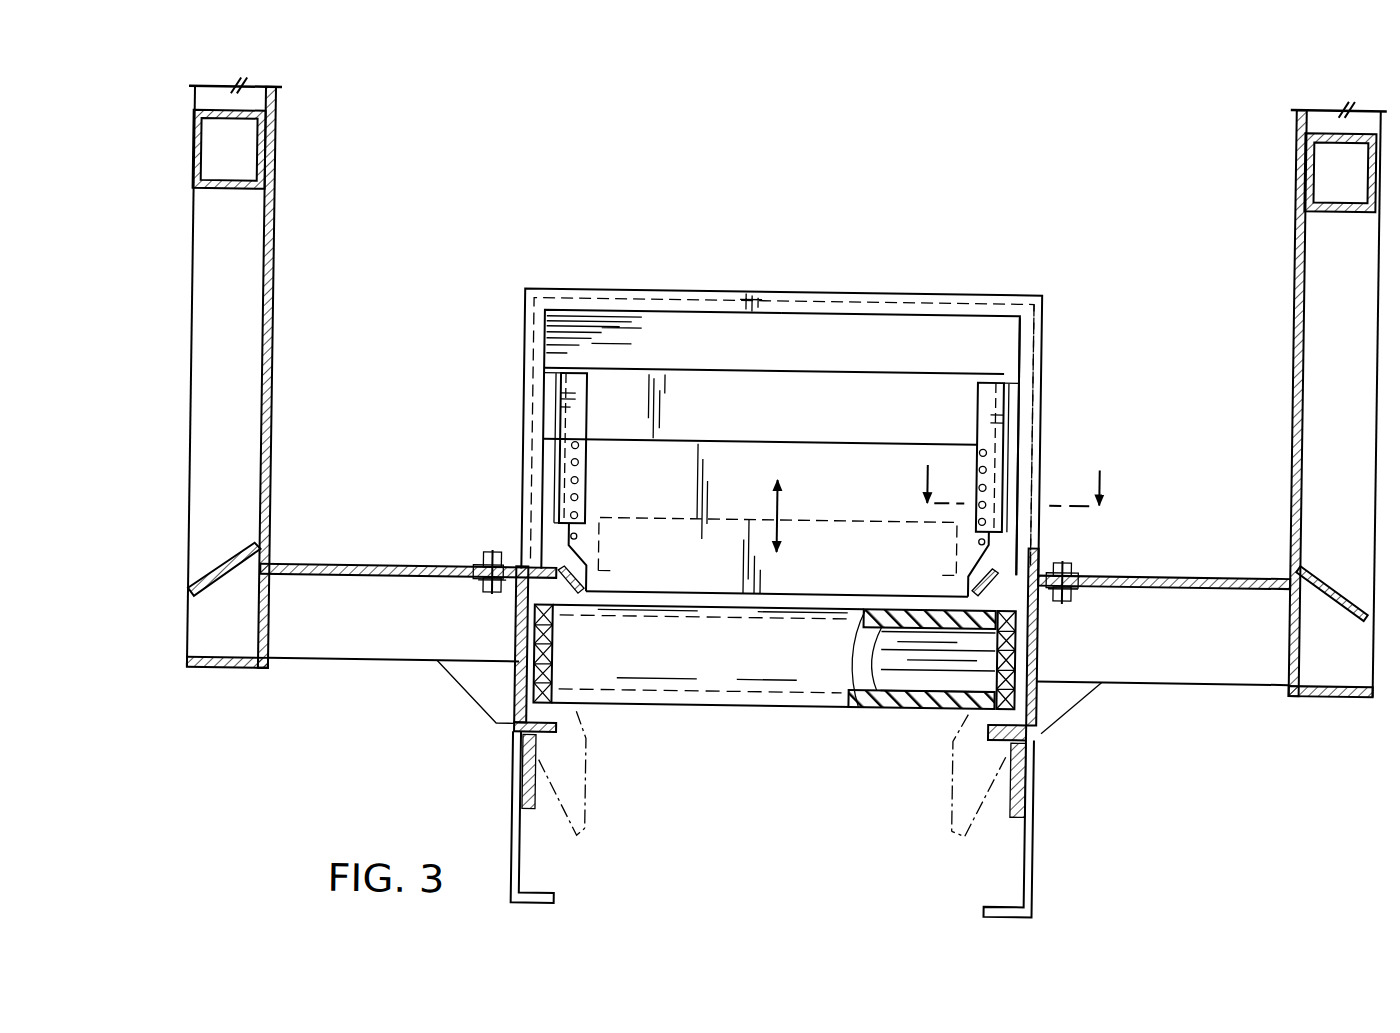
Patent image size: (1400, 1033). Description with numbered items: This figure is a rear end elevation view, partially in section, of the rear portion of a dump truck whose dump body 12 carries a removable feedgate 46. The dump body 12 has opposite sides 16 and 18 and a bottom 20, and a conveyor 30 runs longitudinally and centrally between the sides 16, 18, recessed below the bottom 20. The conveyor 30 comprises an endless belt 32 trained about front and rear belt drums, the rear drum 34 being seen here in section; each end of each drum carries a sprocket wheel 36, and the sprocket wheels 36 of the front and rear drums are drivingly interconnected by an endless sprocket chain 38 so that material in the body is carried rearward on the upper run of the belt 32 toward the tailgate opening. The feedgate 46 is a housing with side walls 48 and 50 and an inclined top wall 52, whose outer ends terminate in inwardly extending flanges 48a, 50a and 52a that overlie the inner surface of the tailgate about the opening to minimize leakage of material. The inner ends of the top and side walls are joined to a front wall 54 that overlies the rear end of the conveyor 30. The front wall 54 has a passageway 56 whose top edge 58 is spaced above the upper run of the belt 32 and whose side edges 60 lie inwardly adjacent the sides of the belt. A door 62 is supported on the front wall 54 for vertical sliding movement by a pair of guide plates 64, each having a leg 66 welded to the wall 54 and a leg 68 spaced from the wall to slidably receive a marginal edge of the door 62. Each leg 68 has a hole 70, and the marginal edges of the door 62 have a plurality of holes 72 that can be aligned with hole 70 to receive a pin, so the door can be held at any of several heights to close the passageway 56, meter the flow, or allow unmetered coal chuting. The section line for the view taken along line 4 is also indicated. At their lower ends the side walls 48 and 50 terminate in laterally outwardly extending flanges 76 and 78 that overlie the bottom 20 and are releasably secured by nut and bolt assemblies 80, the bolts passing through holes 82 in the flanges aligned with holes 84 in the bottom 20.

The dump body 12 is at (155, 122).
The side 16 is at (1291, 165).
The side 18 is at (268, 137).
The bottom 20 is at (313, 571).
The conveyor 30 is at (751, 715).
The endless belt 32 is at (868, 706).
The rear drum 34 is at (915, 690).
The sprocket wheel 36 is at (530, 675).
The endless sprocket chain 38 is at (528, 693).
The section line 4- 4 is at (1012, 484).
The feedgate 46 is at (768, 280).
The side wall 48 is at (1040, 451).
The inwardly extending flange 48a is at (1025, 422).
The side wall 50 is at (528, 346).
The inwardly extending flange 50a is at (540, 421).
The inclined top wall 52 is at (676, 341).
The inwardly extending flange 52a is at (928, 303).
The front wall 54 is at (789, 385).
The passageway 56 is at (819, 533).
The top edge 58 is at (753, 525).
The side edges 60 is at (605, 550).
The door 62 is at (829, 454).
The guide plates 64 is at (578, 376).
The leg 66 is at (555, 435).
The leg 68 is at (564, 398).
The hole 70 is at (579, 461).
The holes 72 is at (590, 496).
The laterally outwardly extending flange 76 is at (1085, 576).
The laterally outwardly extending flange 78 is at (478, 572).
The nut and bolt assemblies 80 is at (493, 552).
The holes 82 is at (479, 582).
The holes 84 is at (476, 594).